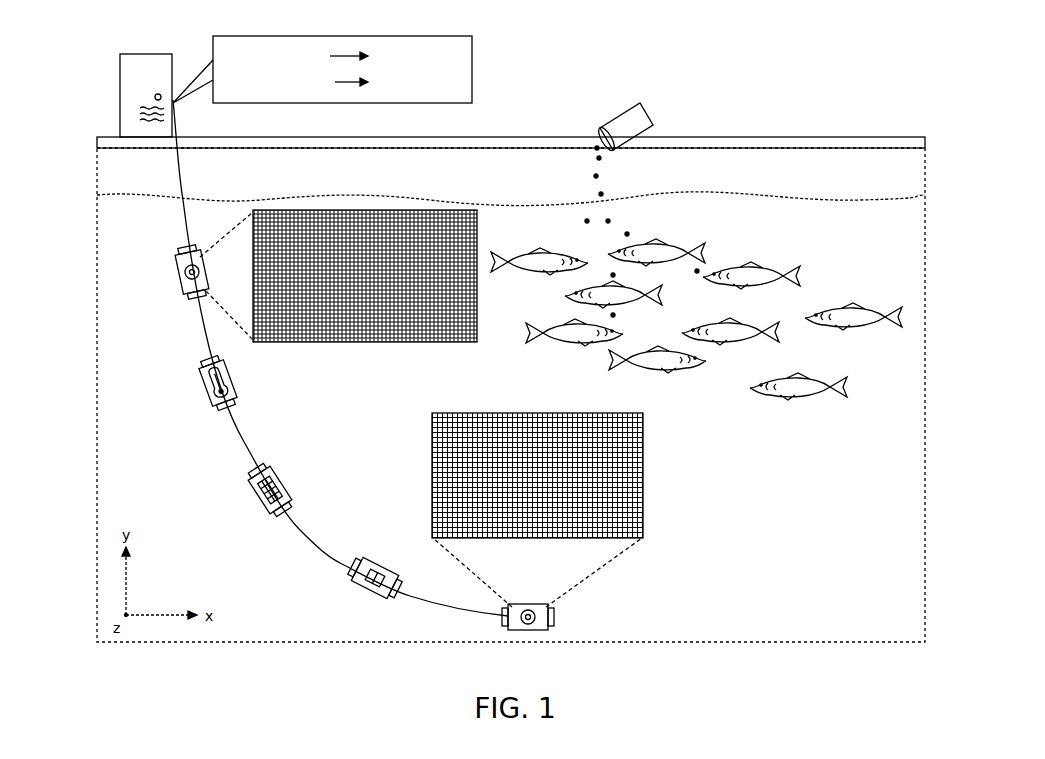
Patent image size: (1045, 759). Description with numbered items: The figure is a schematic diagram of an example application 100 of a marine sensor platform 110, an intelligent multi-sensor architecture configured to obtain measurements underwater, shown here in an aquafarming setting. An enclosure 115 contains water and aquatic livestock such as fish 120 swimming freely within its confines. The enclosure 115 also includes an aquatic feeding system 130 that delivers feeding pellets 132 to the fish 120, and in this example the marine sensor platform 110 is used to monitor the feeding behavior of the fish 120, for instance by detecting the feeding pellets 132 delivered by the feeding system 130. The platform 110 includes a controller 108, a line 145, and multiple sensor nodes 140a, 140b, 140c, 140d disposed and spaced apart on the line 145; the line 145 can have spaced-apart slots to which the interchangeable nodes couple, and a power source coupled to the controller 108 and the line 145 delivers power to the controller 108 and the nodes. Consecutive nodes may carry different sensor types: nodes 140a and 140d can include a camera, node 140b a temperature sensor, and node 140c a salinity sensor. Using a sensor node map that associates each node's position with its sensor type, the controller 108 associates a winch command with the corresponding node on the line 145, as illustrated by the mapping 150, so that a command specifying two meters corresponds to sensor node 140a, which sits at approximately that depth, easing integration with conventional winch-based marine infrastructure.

The aquaculture monitoring system 100 is at (868, 72).
The controller 108 is at (121, 57).
The marine sensor platform 110 is at (82, 107).
The enclosure 115 is at (97, 462).
The fish 120 is at (800, 269).
The aquatic feeding system 130 is at (653, 117).
The feeding pellets 132 is at (620, 186).
The sensor node 140a is at (178, 273).
The sensor node 140b is at (205, 391).
The sensor node 140c is at (258, 501).
The sensor node 140d is at (555, 617).
The line 145 is at (314, 533).
The winch command to sensor node association 150 is at (473, 78).